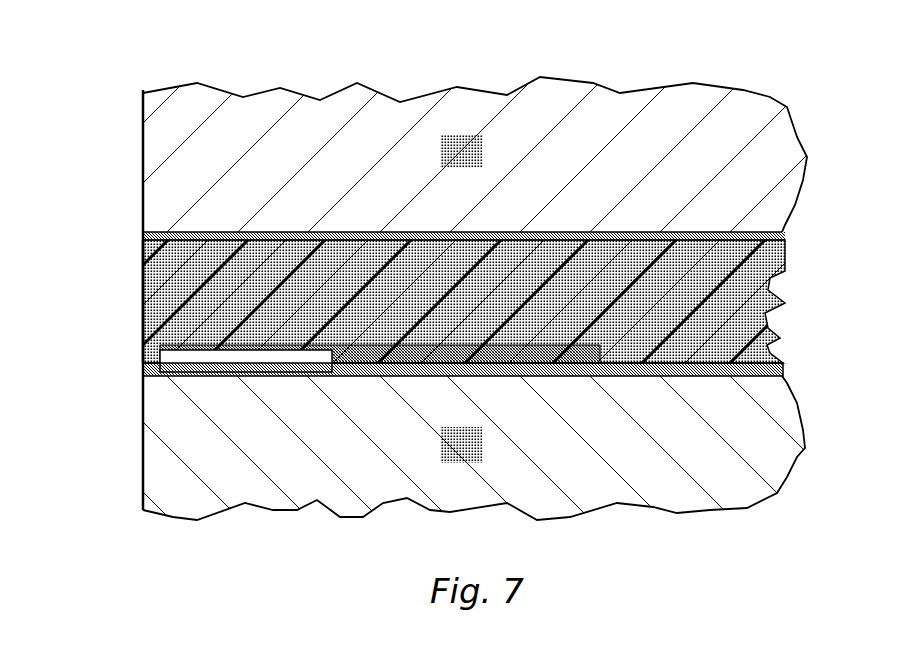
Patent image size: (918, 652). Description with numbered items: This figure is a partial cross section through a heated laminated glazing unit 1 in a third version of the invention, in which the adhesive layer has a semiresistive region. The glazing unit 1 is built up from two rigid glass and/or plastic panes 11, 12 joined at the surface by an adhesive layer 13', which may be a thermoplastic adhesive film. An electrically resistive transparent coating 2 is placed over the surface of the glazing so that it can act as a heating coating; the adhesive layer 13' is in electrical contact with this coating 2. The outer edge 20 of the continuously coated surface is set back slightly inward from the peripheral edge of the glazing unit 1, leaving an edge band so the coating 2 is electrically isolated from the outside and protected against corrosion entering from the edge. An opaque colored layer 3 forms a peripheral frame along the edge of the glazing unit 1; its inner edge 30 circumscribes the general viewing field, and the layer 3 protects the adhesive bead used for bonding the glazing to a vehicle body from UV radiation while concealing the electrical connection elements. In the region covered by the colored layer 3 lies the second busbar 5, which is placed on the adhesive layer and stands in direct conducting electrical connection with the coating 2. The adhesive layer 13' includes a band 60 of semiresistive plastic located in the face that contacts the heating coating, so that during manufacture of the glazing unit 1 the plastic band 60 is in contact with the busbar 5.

The heated laminated glazing unit 1 is at (135, 74).
The electrically resistive transparent coating 2 is at (141, 368).
The opaque colored layer 3 is at (140, 240).
The second busbar 5 is at (277, 376).
The rigid pane 11 is at (476, 154).
The rigid pane 12 is at (453, 451).
The adhesive layer 13' is at (447, 303).
The outer edge of the coated surface 20 is at (185, 345).
The inner edge of the colored layer 30 is at (450, 232).
The band of semiresistive plastic 60 is at (503, 376).